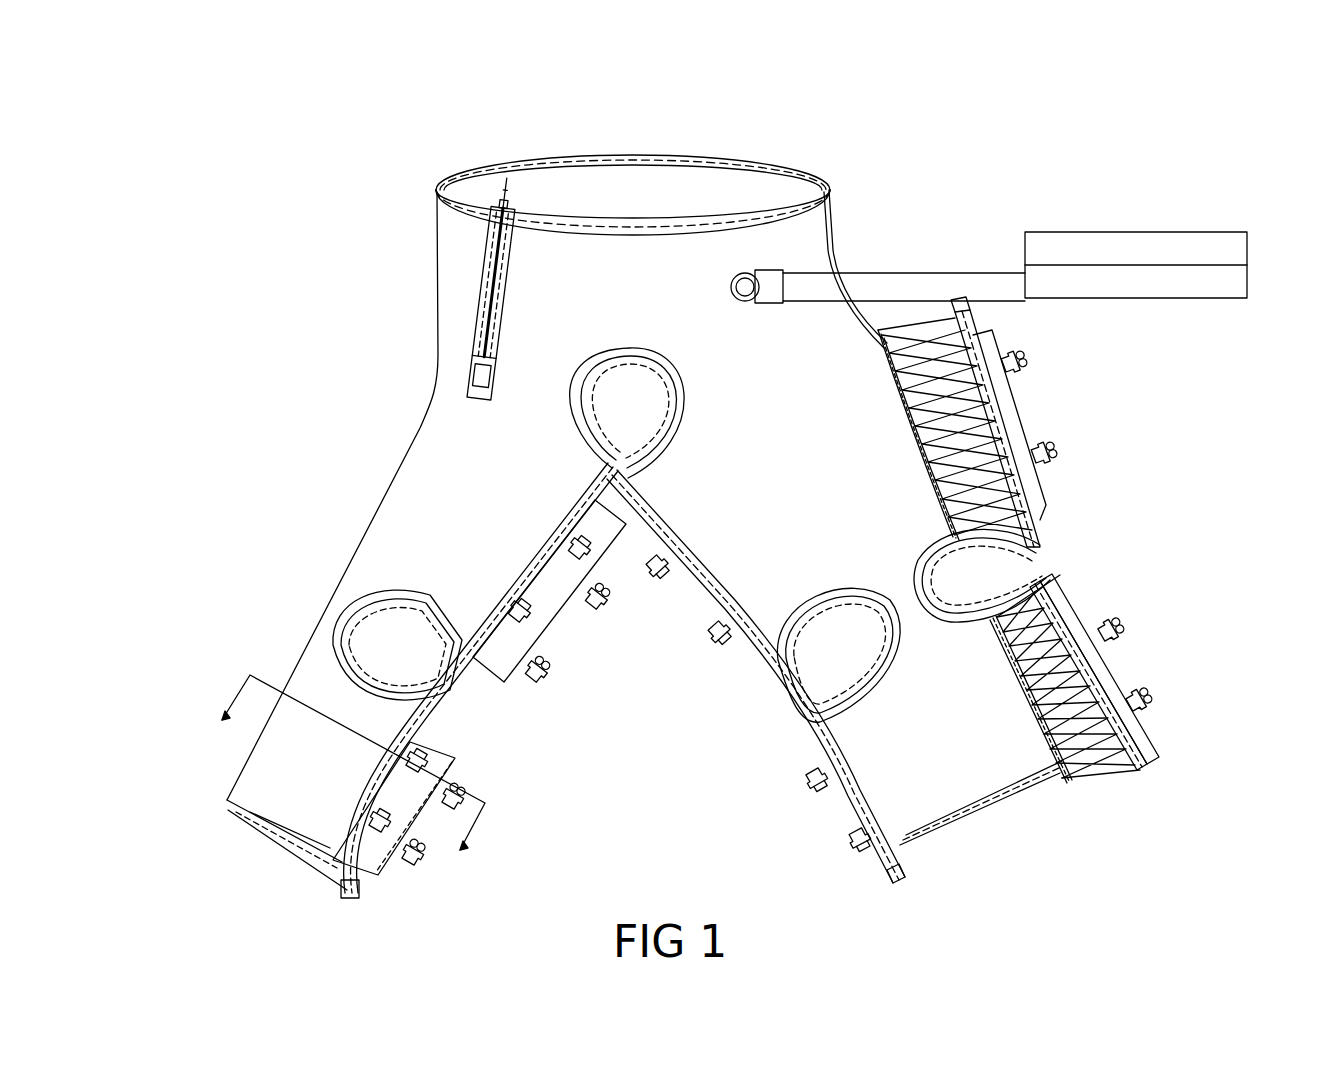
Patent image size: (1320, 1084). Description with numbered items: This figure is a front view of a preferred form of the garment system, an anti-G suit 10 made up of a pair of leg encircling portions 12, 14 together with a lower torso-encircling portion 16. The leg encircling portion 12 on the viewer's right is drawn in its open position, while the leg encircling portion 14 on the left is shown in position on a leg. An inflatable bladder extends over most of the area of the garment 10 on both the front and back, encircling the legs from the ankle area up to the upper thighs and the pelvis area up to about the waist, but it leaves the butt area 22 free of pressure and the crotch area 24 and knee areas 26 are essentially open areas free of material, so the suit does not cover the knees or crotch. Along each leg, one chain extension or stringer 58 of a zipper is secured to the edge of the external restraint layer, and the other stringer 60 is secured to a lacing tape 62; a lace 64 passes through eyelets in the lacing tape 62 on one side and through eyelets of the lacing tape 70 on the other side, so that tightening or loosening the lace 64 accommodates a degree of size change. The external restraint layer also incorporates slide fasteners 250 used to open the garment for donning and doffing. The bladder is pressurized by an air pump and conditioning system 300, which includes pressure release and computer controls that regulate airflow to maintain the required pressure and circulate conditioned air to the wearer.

The anti-G suit 10 is at (410, 398).
The leg encircling portion 12 is at (872, 525).
The leg encircling portion 14 is at (447, 542).
The lower torso-encircling portion 16 is at (637, 283).
The butt area 22 is at (628, 204).
The crotch area 24 is at (627, 413).
The knee areas 26 is at (691, 625).
The chain extension or stringer 58 is at (504, 682).
The chain extension or stringer 60 is at (467, 713).
The lacing tape 62 is at (955, 367).
The lace 64 is at (987, 407).
The lacing tape 70 is at (1008, 453).
The slide fasteners 250 is at (480, 280).
The air pump and conditioning system 300 is at (1130, 232).